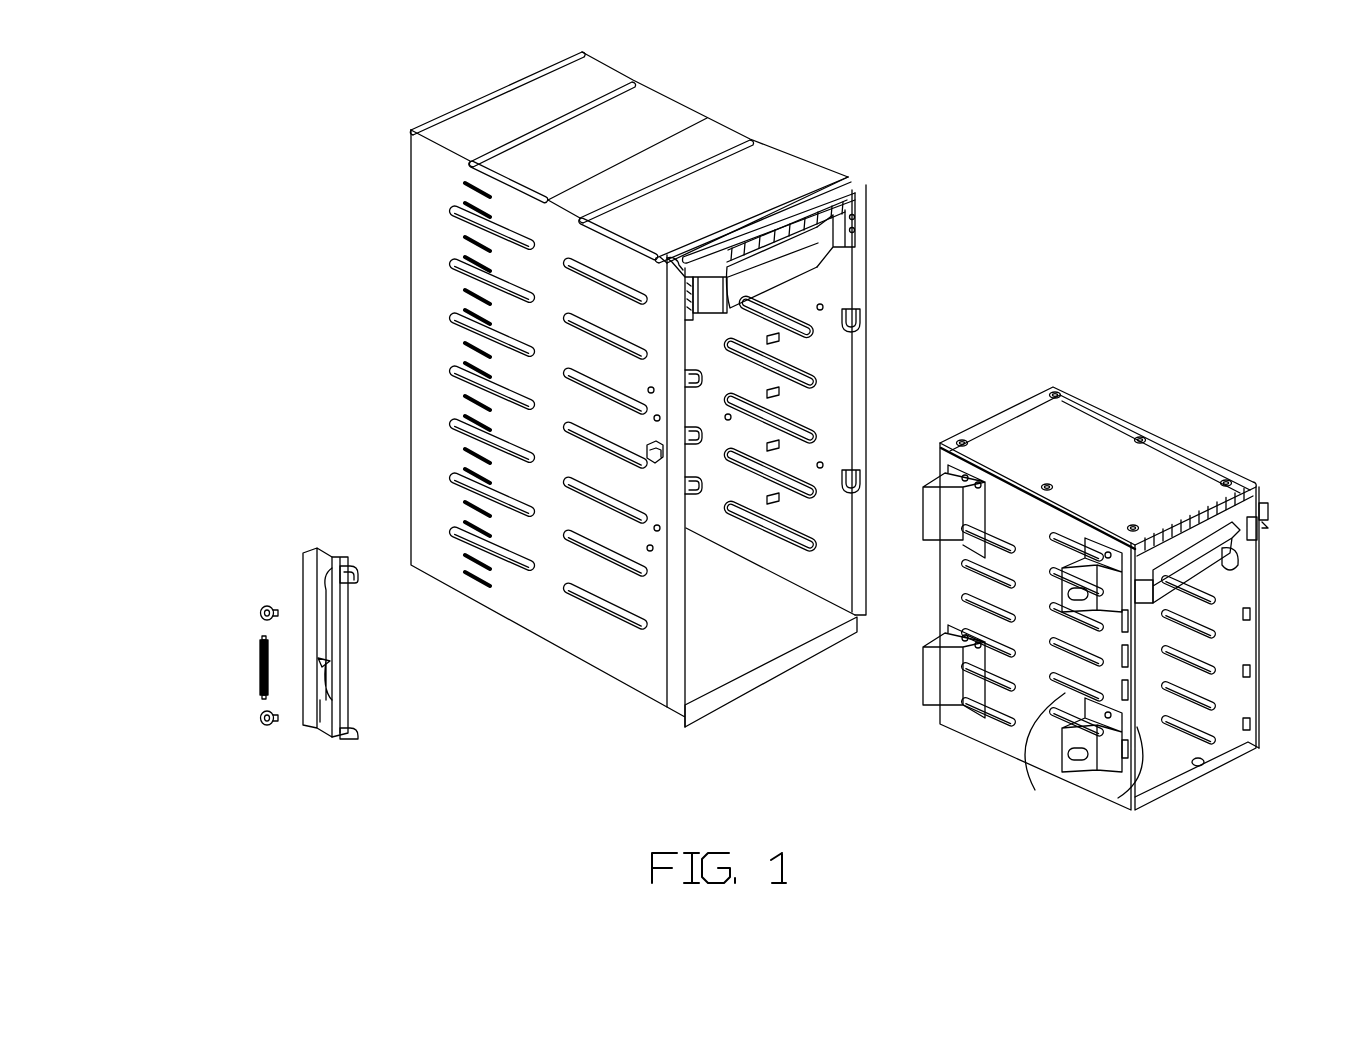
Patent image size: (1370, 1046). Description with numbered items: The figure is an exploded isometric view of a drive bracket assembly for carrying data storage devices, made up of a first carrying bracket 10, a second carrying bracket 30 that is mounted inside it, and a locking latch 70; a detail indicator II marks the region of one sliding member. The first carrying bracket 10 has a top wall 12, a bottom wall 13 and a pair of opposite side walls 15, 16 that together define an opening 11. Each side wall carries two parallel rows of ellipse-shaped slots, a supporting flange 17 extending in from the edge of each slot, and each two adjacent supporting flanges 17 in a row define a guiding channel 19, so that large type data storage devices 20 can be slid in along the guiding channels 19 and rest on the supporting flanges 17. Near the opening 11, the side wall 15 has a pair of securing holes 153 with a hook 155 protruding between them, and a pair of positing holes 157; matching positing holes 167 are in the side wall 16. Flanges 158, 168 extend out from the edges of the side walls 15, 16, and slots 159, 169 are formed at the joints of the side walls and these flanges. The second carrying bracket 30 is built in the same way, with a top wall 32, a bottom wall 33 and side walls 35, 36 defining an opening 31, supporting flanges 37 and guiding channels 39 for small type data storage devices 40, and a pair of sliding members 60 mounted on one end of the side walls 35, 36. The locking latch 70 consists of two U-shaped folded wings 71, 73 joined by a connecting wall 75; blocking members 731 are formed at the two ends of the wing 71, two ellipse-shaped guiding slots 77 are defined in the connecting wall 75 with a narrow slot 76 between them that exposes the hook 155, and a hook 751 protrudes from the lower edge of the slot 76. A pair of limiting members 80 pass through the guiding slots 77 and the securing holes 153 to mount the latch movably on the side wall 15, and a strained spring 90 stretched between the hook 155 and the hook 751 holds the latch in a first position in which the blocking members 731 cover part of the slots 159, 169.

The first carrying bracket 10 is at (733, 108).
The opening 11 is at (712, 592).
The top wall 12 is at (770, 168).
The bottom wall 13 is at (765, 637).
The side wall 15 is at (633, 658).
The side wall 16 is at (828, 560).
The supporting flange 17 is at (792, 364).
The guiding channel 19 is at (790, 403).
The large type data storage device 20 is at (858, 212).
The securing hole 153 is at (653, 415).
The hook 155 is at (640, 442).
The positing hole 157 is at (647, 386).
The flange 158 is at (676, 705).
The slot 159 is at (683, 405).
The positing hole 167 is at (821, 470).
The flange 168 is at (862, 275).
The slot 169 is at (860, 318).
The second carrying bracket 30 is at (1097, 380).
The opening 31 is at (1168, 735).
The top wall 32 is at (1195, 463).
The bottom wall 33 is at (1215, 752).
The side wall 35 is at (1003, 730).
The side wall 36 is at (1236, 690).
The supporting flange 37 is at (1207, 630).
The guiding channel 39 is at (1203, 652).
The small type data storage device 40 is at (1262, 520).
The sliding member 60 is at (928, 673).
The locking latch 70 is at (298, 520).
The wing 71 is at (308, 567).
The wing 73 is at (338, 640).
The connecting wall 75 is at (330, 718).
The narrow slot 76 is at (327, 618).
The guiding slot 77 is at (338, 560).
The blocking member 731 is at (350, 745).
The hook 751 is at (330, 662).
The limiting member 80 is at (258, 612).
The spring 90 is at (258, 665).
The detail view indicator II is at (1084, 758).